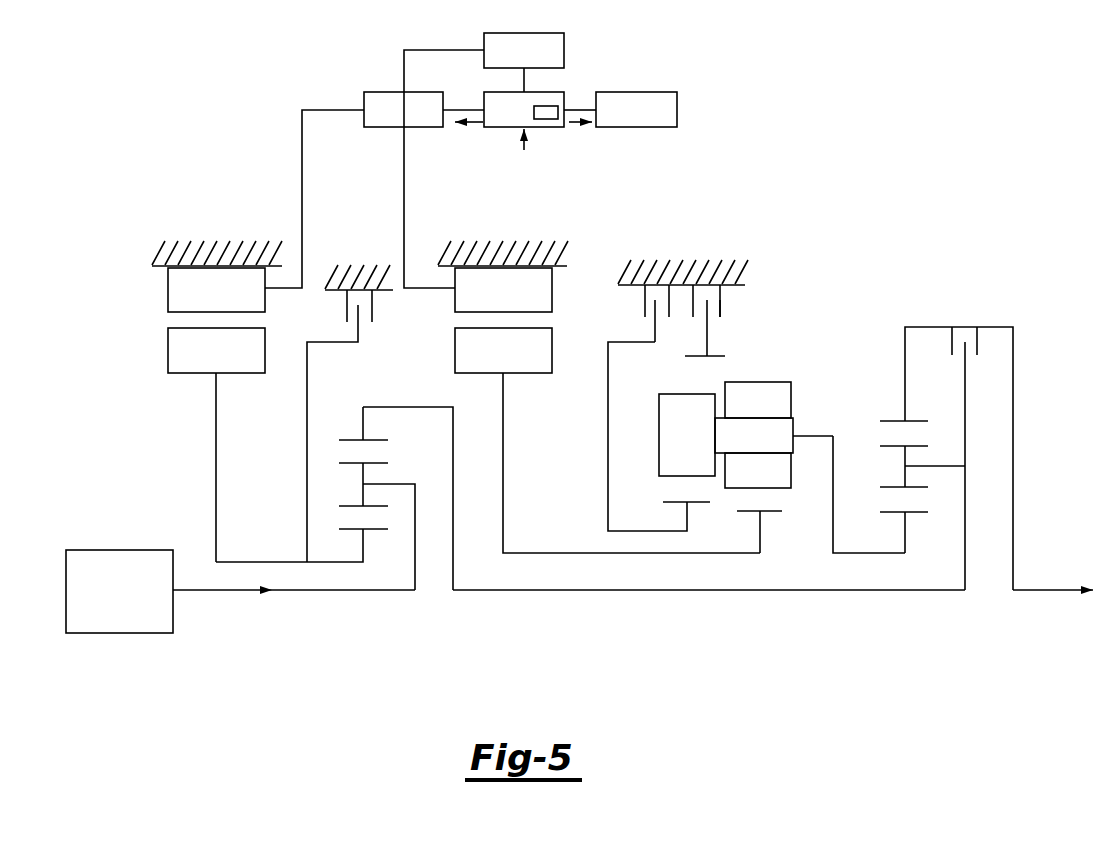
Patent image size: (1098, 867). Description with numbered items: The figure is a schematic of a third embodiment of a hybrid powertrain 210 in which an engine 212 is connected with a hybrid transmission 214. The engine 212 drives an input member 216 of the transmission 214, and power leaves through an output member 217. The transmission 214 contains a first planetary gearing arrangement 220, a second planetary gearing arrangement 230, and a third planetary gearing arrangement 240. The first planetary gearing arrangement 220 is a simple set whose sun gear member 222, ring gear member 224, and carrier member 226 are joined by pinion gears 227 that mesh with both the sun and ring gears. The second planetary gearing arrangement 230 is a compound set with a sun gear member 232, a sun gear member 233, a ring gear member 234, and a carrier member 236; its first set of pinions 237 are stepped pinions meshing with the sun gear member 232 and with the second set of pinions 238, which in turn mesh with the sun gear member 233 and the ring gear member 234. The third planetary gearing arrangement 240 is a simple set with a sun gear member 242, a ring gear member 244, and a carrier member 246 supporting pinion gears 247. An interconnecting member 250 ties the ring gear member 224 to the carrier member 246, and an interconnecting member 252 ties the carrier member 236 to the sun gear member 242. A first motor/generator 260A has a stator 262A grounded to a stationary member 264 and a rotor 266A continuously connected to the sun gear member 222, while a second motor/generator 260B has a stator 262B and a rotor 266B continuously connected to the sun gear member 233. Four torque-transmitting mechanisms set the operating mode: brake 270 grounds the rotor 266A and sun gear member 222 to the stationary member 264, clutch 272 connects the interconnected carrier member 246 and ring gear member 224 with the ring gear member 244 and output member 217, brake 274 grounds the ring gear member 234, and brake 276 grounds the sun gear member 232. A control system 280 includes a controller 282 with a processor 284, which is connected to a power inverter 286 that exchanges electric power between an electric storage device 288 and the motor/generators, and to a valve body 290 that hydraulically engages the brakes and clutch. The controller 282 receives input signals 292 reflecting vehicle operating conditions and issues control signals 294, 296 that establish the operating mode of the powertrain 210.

The hybrid powertrain 210 is at (915, 157).
The engine 212 is at (135, 628).
The hybrid transmission 214 is at (698, 281).
The input member 216 is at (212, 593).
The output member 217 is at (1047, 593).
The first planetary gearing arrangement 220 is at (334, 521).
The sun gear member 222 is at (358, 531).
The ring gear member 224 is at (352, 438).
The carrier member 226 is at (402, 481).
The pinion gears 227 is at (363, 490).
The second planetary gearing arrangement 230 is at (756, 488).
The sun gear member 232 is at (693, 503).
The sun gear member 233 is at (768, 513).
The ring gear member 234 is at (719, 352).
The carrier member 236 is at (815, 436).
The first set of pinions 237 is at (659, 437).
The second set of pinions 238 is at (725, 388).
The third planetary gearing arrangement 240 is at (935, 483).
The sun gear member 242 is at (920, 538).
The ring gear member 244 is at (893, 418).
The carrier member 246 is at (943, 462).
The pinion gears 247 is at (905, 472).
The interconnecting member 250 is at (557, 595).
The interconnecting member 252 is at (833, 487).
The first motor/generator 260A is at (174, 405).
The second motor/generator 260B is at (607, 388).
The stator 262A is at (232, 304).
The stator 262B is at (519, 304).
The stationary member 264 is at (206, 245).
The rotor 266A is at (232, 365).
The rotor 266B is at (519, 365).
The brake 270 is at (372, 335).
The clutch 272 is at (985, 340).
The brake 274 is at (716, 320).
The brake 276 is at (649, 323).
The control system 280 is at (504, 152).
The controller 282 is at (528, 127).
The processor 284 is at (548, 107).
The power inverter 286 is at (419, 127).
The electric storage device 288 is at (540, 68).
The valve body 290 is at (652, 127).
The input signals 292 is at (524, 150).
The control signal 294 is at (483, 124).
The control signal 296 is at (571, 124).